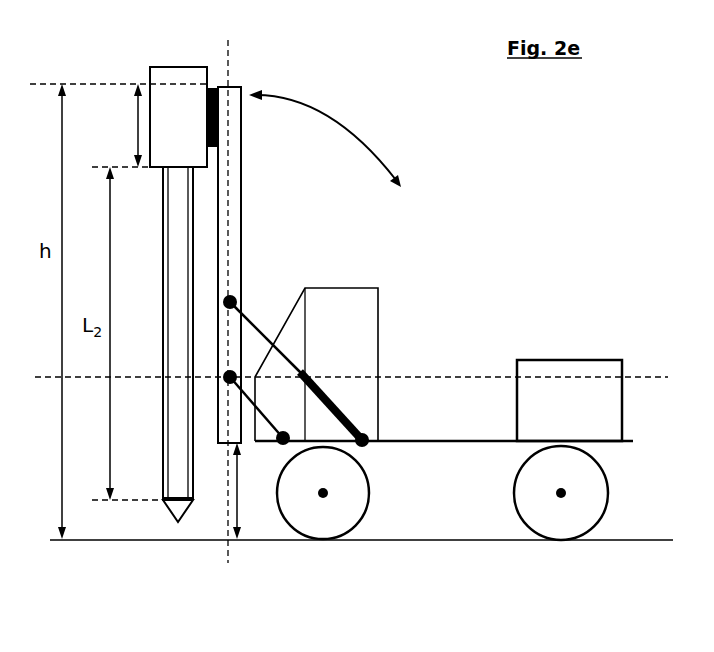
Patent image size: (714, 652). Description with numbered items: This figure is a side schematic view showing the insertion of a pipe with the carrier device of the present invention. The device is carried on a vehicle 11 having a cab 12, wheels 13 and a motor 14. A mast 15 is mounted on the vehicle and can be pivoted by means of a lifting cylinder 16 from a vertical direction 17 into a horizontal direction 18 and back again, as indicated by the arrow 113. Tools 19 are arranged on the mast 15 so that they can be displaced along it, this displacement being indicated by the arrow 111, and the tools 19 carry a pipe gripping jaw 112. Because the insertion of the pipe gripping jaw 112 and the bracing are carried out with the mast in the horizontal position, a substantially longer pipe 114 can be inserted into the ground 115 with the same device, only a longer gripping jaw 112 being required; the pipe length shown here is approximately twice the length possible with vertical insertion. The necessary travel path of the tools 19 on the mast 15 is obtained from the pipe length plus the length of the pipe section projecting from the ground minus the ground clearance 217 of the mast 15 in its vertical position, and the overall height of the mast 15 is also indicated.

The vehicle 11 is at (502, 208).
The cab 12 is at (362, 303).
The wheels 13 is at (352, 498).
The motor 14 is at (553, 413).
The mast 15 is at (238, 210).
The lifting cylinder 16 is at (340, 410).
The vertical direction 17 is at (230, 67).
The horizontal direction 18 is at (442, 377).
The tools 19 is at (166, 75).
The arrow 111 is at (122, 125).
The pipe gripping jaw 112 is at (175, 300).
The arrow 113 is at (325, 138).
The pipe 114 is at (163, 450).
The ground 115 is at (455, 540).
The ground clearance 217 is at (240, 490).